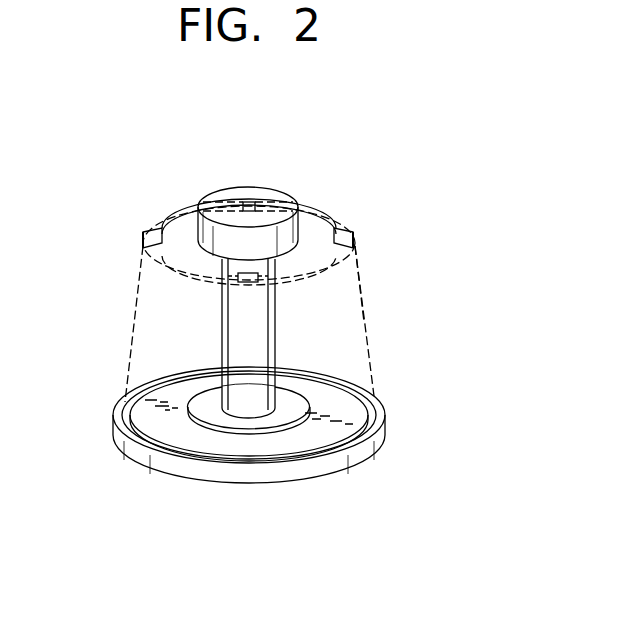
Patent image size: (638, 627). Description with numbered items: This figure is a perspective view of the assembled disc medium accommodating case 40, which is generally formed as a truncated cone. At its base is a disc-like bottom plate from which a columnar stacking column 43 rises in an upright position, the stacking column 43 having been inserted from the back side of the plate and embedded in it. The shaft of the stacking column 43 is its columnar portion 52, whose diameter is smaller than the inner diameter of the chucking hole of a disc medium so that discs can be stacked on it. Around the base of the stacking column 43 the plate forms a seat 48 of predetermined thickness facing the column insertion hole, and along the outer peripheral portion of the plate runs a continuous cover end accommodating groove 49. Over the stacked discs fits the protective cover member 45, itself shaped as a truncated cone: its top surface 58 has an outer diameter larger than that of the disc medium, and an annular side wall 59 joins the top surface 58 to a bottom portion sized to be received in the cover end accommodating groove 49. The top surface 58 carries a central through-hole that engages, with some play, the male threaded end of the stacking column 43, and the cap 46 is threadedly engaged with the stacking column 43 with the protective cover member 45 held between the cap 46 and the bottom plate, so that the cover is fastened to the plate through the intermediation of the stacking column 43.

The disc medium accommodating case 40 is at (438, 203).
The stacking column 43 is at (222, 338).
The protective cover member 45 is at (372, 367).
The cap 46 is at (317, 235).
The seat 48 is at (277, 415).
The cover end accommodating groove 49 is at (374, 410).
The columnar portion 52 is at (221, 303).
The top surface 58 is at (326, 215).
The annular side wall 59 is at (366, 322).